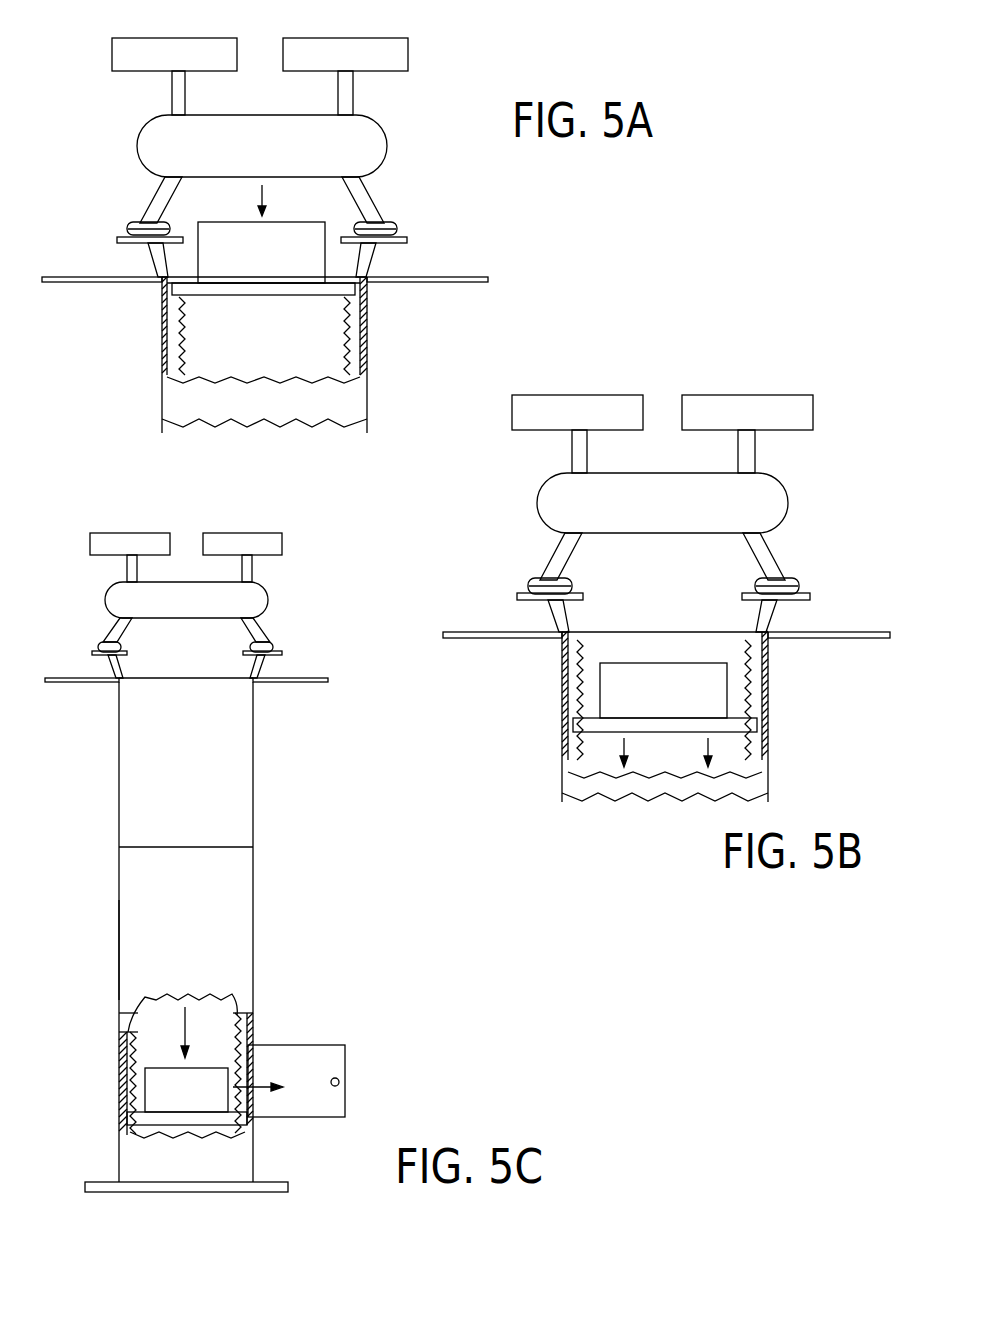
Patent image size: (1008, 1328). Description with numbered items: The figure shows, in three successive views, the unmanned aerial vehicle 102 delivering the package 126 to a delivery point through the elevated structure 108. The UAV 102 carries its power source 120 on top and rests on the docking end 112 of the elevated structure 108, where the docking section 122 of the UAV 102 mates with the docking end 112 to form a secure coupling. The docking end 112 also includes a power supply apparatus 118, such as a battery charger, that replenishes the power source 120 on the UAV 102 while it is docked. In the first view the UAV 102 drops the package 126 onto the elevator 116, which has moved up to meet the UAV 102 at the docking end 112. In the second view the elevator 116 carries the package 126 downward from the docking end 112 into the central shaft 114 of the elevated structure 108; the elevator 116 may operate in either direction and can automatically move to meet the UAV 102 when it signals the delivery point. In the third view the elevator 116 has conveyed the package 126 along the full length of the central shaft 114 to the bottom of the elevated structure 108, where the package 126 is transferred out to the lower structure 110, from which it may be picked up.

In FIG. 5A, the unmanned aerial vehicle 102 is at (385, 118).
In FIG. 5B, the unmanned aerial vehicle 102 is at (775, 475).
In FIG. 5C, the unmanned aerial vehicle 102 is at (105, 592).
In FIG. 5A, the elevated structure 108 is at (162, 400).
In FIG. 5B, the elevated structure 108 is at (562, 720).
In FIG. 5C, the elevated structure 108 is at (255, 832).
In FIG. 5C, the lower structure 110 is at (255, 1030).
In FIG. 5C, the docking end 112 is at (110, 683).
In FIG. 5C, the central shaft 114 is at (119, 915).
In FIG. 5A, the elevator 116 is at (332, 290).
In FIG. 5B, the elevator 116 is at (732, 725).
In FIG. 5C, the elevator 116 is at (160, 1118).
In FIG. 5A, the power supply apparatus 118 is at (117, 240).
In FIG. 5B, the power supply apparatus 118 is at (517, 598).
In FIG. 5C, the power supply apparatus 118 is at (92, 653).
In FIG. 5A, the power source 120 is at (290, 38).
In FIG. 5B, the power source 120 is at (693, 395).
In FIG. 5C, the power source 120 is at (213, 533).
In FIG. 5A, the docking section 122 is at (140, 222).
In FIG. 5B, the docking section 122 is at (540, 580).
In FIG. 5C, the docking section 122 is at (102, 642).
In FIG. 5A, the package 126 is at (231, 265).
In FIG. 5B, the package 126 is at (710, 690).
In FIG. 5C, the package 126 is at (210, 1080).